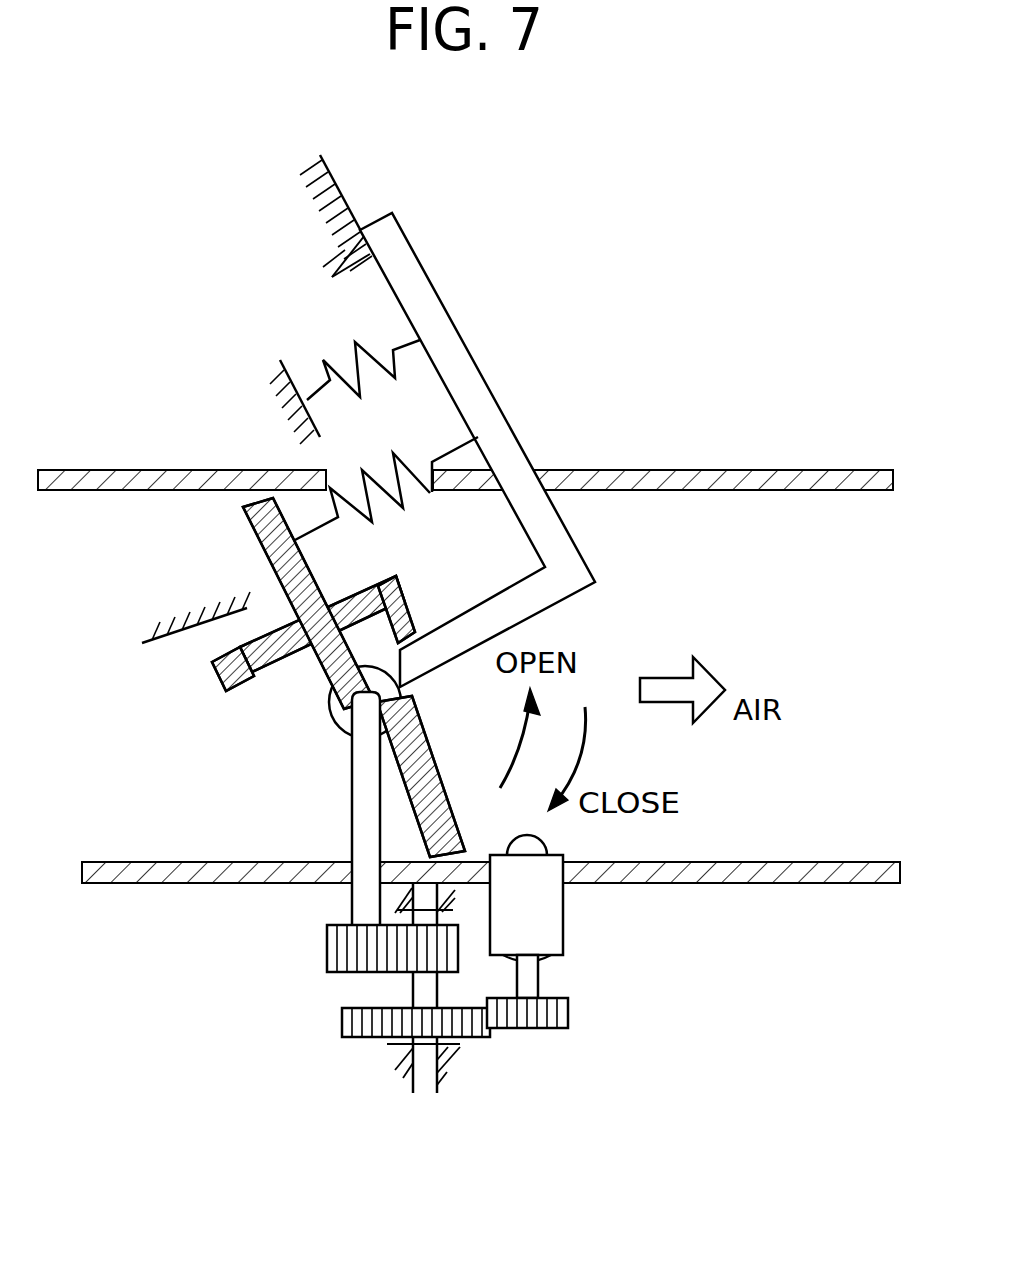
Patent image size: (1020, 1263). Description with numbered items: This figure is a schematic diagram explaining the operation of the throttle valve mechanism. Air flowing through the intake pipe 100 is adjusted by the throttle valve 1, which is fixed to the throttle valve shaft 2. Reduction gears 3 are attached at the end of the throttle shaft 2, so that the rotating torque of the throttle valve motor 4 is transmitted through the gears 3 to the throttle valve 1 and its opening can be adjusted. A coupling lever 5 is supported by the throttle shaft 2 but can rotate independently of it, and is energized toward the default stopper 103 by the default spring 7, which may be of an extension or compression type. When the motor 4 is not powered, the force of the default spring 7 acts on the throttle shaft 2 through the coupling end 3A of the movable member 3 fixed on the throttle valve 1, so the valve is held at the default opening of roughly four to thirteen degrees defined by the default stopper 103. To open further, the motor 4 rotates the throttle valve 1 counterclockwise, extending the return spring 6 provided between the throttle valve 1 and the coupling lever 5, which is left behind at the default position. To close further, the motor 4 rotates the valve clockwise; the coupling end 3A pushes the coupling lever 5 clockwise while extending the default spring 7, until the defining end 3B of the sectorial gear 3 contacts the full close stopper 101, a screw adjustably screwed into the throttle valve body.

The throttle valve 1 is at (422, 767).
The throttle valve shaft 2 is at (352, 800).
The reduction gears 3 is at (285, 667).
The coupling end 3A is at (400, 590).
The defining end 3B is at (228, 650).
The throttle valve motor 4 is at (553, 923).
The coupling lever 5 is at (563, 543).
The return spring 6 is at (420, 485).
The default spring 7 is at (335, 360).
The intake pipe 100 is at (816, 883).
The full close stopper 101 is at (165, 645).
The default stopper 103 is at (348, 197).